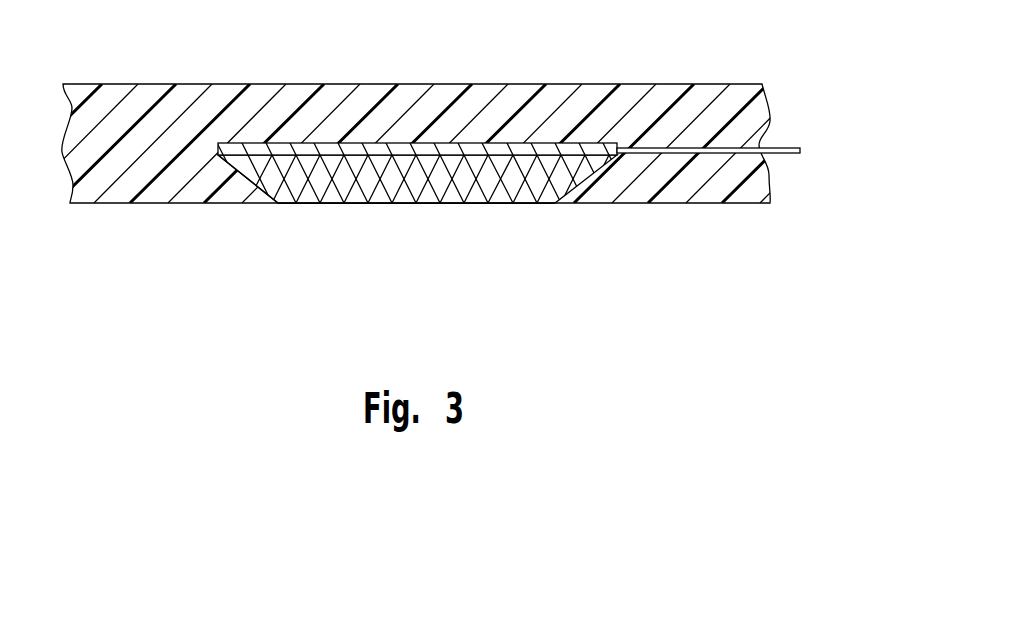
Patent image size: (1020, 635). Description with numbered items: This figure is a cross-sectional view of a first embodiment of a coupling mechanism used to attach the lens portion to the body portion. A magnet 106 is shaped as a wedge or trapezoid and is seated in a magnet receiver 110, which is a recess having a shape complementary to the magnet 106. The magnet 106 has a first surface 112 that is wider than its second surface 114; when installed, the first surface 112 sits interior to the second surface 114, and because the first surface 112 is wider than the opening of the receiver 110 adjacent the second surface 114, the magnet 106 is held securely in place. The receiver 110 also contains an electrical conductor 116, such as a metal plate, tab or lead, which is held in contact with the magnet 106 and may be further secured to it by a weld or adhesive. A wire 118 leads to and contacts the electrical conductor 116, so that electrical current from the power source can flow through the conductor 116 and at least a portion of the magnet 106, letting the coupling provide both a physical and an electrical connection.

The magnet 106 is at (518, 190).
The magnet receiver 110 is at (243, 177).
The first surface 112 is at (323, 143).
The second surface 114 is at (396, 205).
The electrical conductor 116 is at (473, 152).
The wire 118 is at (790, 149).